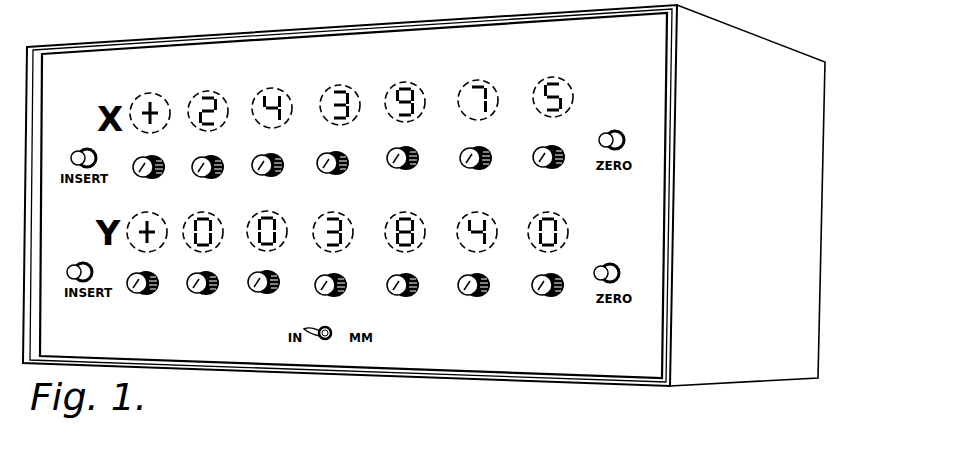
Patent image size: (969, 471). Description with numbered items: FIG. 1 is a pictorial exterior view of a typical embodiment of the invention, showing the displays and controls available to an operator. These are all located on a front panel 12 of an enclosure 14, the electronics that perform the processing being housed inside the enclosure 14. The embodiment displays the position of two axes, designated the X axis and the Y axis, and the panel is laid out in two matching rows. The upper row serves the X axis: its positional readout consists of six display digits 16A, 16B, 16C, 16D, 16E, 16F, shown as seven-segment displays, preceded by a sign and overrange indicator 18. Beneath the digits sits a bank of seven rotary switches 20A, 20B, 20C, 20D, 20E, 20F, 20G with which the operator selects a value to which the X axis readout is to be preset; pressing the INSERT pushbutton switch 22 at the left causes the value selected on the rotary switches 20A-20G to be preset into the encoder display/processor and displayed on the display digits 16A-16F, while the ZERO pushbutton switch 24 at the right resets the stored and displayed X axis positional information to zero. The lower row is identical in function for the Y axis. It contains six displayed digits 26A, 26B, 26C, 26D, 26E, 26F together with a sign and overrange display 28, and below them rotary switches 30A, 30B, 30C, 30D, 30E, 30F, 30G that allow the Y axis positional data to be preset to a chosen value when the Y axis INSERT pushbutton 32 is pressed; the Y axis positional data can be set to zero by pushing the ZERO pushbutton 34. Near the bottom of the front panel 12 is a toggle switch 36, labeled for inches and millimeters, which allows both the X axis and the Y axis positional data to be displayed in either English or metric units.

The front panel 12 is at (640, 363).
The enclosure 14 is at (806, 215).
The display digit 16A is at (208, 92).
The display digit 16B is at (272, 90).
The display digit 16C is at (338, 87).
The display digit 16D is at (407, 84).
The display digit 16E is at (480, 82).
The display digit 16F is at (555, 79).
The sign and overrange indicator 18 is at (147, 95).
The rotary switch 20A is at (133, 162).
The rotary switch 20B is at (192, 162).
The rotary switch 20C is at (252, 160).
The rotary switch 20D is at (317, 159).
The rotary switch 20E is at (387, 155).
The rotary switch 20F is at (460, 155).
The rotary switch 20G is at (533, 154).
The INSERT pushbutton switch 22 is at (76, 150).
The ZERO pushbutton switch 24 is at (606, 132).
The displayed digit 26A is at (203, 214).
The displayed digit 26B is at (267, 213).
The displayed digit 26C is at (333, 214).
The displayed digit 26D is at (405, 214).
The displayed digit 26E is at (477, 214).
The displayed digit 26F is at (548, 214).
The sign and overrange display 28 is at (145, 214).
The rotary switch 30A is at (136, 288).
The rotary switch 30B is at (195, 288).
The rotary switch 30C is at (255, 287).
The rotary switch 30D is at (322, 290).
The rotary switch 30E is at (395, 290).
The rotary switch 30F is at (466, 290).
The rotary switch 30G is at (540, 290).
The INSERT pushbutton 32 is at (70, 265).
The ZERO pushbutton 34 is at (605, 265).
The toggle switch 36 is at (325, 341).